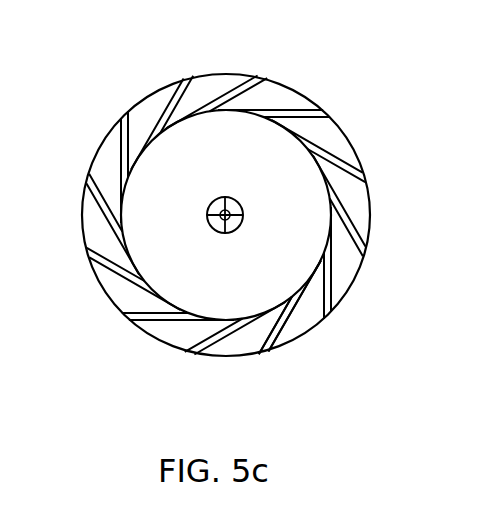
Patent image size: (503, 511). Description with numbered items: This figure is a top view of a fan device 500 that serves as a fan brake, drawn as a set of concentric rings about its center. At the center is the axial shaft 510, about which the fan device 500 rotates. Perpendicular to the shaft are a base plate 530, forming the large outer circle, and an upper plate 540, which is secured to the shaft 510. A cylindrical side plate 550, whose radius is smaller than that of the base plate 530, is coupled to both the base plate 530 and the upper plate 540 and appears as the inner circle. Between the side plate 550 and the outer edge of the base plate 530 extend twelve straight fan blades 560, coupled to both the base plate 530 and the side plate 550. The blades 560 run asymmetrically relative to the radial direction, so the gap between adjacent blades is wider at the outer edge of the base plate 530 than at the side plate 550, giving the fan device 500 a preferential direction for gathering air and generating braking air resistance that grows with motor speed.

The fan device 500 is at (347, 51).
The axial shaft 510 is at (245, 198).
The base plate 530 is at (128, 287).
The upper plate 540 is at (179, 195).
The cylindrical side plate 550 is at (208, 313).
The fan blades 560 is at (373, 258).